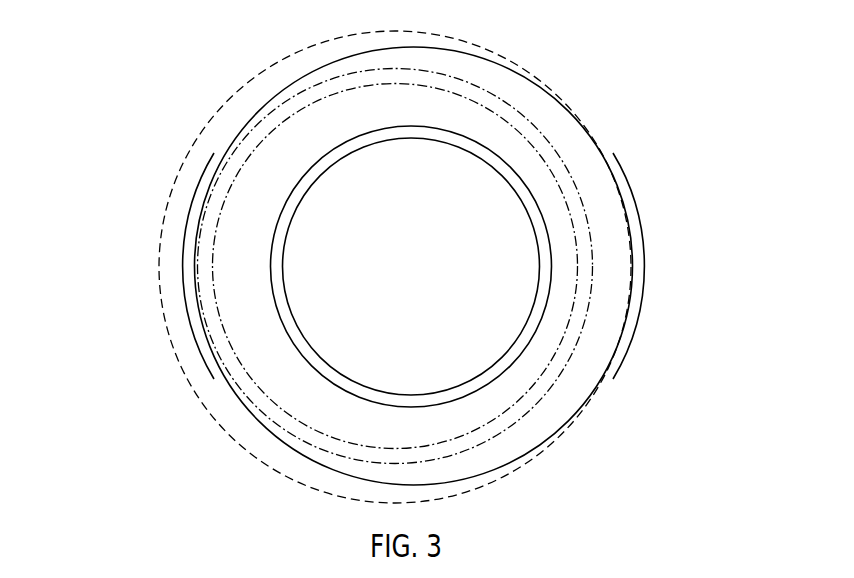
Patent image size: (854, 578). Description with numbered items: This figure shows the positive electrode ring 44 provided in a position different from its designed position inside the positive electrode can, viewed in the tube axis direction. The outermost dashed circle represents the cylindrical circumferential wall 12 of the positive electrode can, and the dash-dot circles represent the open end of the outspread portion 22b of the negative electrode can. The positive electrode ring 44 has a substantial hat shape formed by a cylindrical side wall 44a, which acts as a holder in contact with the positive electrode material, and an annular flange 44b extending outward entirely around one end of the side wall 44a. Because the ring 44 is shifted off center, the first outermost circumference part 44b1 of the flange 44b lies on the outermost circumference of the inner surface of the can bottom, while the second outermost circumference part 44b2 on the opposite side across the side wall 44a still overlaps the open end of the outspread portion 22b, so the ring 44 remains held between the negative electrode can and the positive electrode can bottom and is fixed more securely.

The circumferential wall 12 is at (560, 438).
The outspread portion 22b is at (583, 198).
The positive electrode ring 44 is at (224, 132).
The cylindrical side wall 44a is at (283, 263).
The annular flange 44b is at (581, 148).
The first outermost circumference part 44b1 is at (632, 259).
The second outermost circumference part 44b2 is at (193, 275).